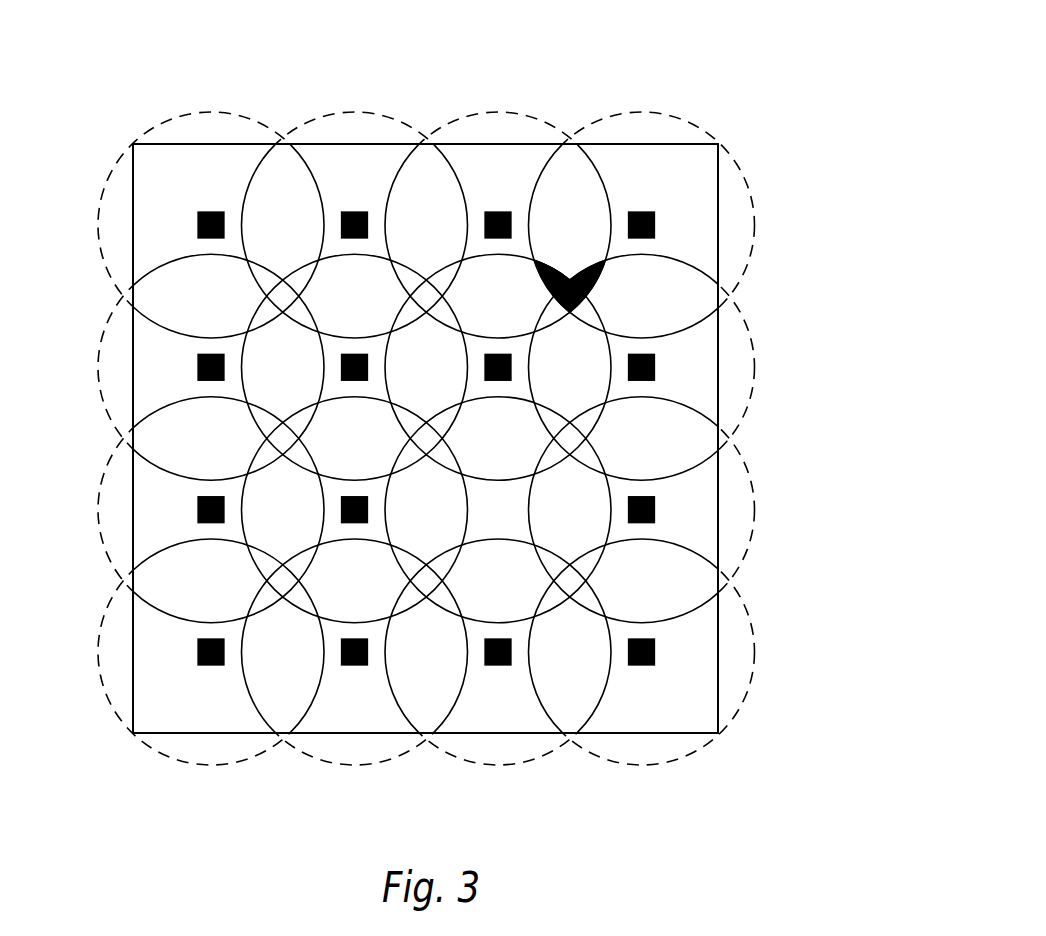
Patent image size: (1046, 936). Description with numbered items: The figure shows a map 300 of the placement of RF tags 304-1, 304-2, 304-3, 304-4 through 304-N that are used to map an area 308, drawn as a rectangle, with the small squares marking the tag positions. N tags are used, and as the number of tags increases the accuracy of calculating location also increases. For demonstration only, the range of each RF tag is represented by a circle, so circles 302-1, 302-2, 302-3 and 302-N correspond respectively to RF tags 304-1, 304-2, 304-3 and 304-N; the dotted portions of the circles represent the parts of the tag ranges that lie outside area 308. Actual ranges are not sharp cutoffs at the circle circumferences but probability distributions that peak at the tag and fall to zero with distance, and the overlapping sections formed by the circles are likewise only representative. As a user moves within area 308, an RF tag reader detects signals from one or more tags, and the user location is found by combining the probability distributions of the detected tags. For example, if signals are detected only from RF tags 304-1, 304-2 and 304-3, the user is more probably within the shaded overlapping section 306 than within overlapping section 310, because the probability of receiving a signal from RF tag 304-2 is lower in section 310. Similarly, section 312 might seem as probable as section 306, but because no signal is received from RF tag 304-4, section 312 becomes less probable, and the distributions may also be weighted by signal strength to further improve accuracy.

The map 300 is at (110, 69).
The circle 302-1 is at (748, 175).
The circle 302-2 is at (748, 321).
The circle 302-3 is at (550, 118).
The circle 302-N is at (751, 465).
The RF tag 304-1 is at (642, 212).
The RF tag 304-2 is at (643, 354).
The RF tag 304-3 is at (498, 212).
The RF tag 304-4 is at (498, 380).
The RF tag 304-N is at (641, 497).
The overlapping section 306 is at (583, 266).
The area 308 is at (133, 340).
The overlapping section 310 is at (545, 282).
The section 312 is at (572, 314).